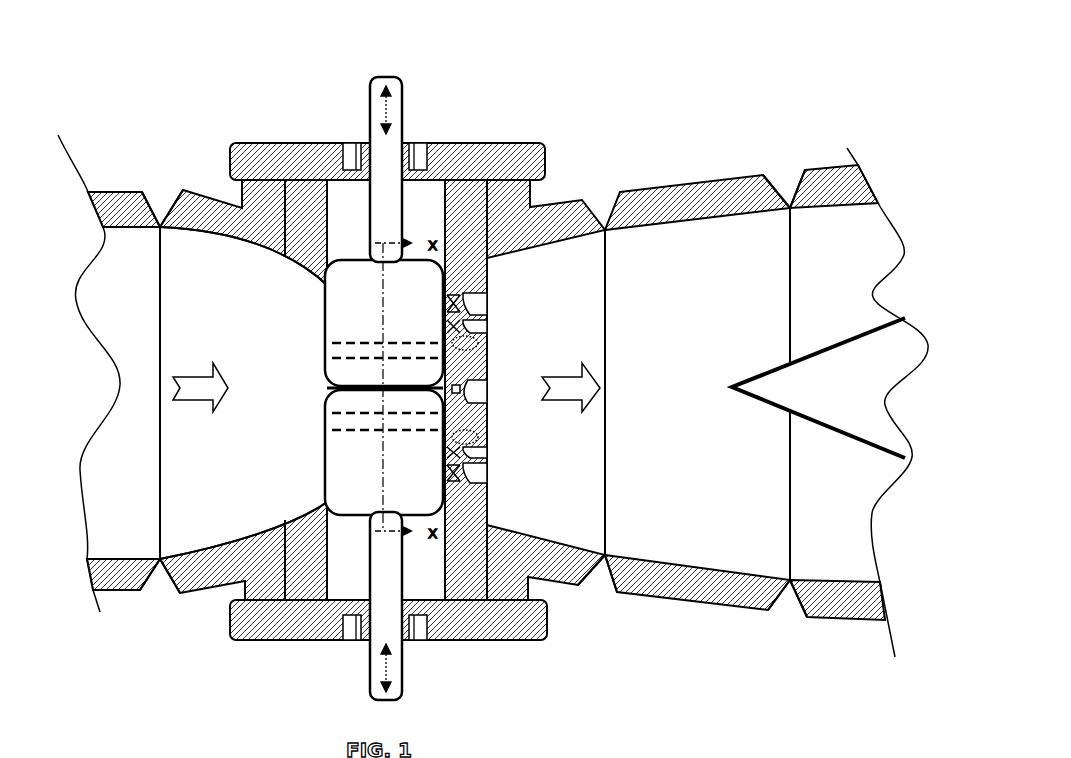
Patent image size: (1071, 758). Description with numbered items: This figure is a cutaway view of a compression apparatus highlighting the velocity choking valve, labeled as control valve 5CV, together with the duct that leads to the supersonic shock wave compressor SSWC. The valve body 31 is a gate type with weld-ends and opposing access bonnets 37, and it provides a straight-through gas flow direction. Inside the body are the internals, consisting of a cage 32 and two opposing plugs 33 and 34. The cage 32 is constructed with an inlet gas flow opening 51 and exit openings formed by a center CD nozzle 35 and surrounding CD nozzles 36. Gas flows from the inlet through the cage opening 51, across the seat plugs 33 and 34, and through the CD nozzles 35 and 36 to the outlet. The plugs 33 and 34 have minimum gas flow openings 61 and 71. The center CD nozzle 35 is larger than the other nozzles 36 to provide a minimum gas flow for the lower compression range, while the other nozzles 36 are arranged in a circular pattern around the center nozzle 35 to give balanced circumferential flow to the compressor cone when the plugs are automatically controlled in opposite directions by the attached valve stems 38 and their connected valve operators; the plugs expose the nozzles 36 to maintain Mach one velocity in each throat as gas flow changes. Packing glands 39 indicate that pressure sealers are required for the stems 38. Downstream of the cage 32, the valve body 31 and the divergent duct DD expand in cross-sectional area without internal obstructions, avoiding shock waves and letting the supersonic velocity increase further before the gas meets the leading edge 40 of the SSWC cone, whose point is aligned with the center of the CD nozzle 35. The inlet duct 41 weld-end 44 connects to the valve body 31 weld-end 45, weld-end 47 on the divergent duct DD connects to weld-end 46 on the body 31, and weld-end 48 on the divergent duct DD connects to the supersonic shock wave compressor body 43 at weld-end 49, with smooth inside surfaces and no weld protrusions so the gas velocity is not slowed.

The valve body 31 is at (212, 188).
The cage 32 is at (489, 266).
The plug 33 is at (333, 332).
The plug 34 is at (330, 463).
The center CD nozzle 35 is at (488, 385).
The surrounding CD nozzles 36 is at (488, 463).
The access bonnet 37 is at (298, 143).
The valve stem 38 is at (370, 112).
The packing gland 39 is at (421, 142).
The leading edge 40 is at (772, 382).
The inlet duct 41 is at (130, 592).
The supersonic shock wave compressor body 43 is at (876, 620).
The weld-end 44 is at (145, 190).
The weld-end 45 is at (172, 587).
The weld-end 46 is at (585, 585).
The weld-end 47 is at (615, 592).
The weld-end 48 is at (777, 190).
The weld-end 49 is at (802, 607).
The inlet gas flow opening 51 is at (292, 283).
The minimum gas flow opening 61 is at (327, 377).
The minimum gas flow opening 71 is at (327, 397).
The control valve 5CV is at (580, 86).
The supersonic shock wave compressor SSWC is at (822, 156).
The divergent duct DD is at (668, 186).